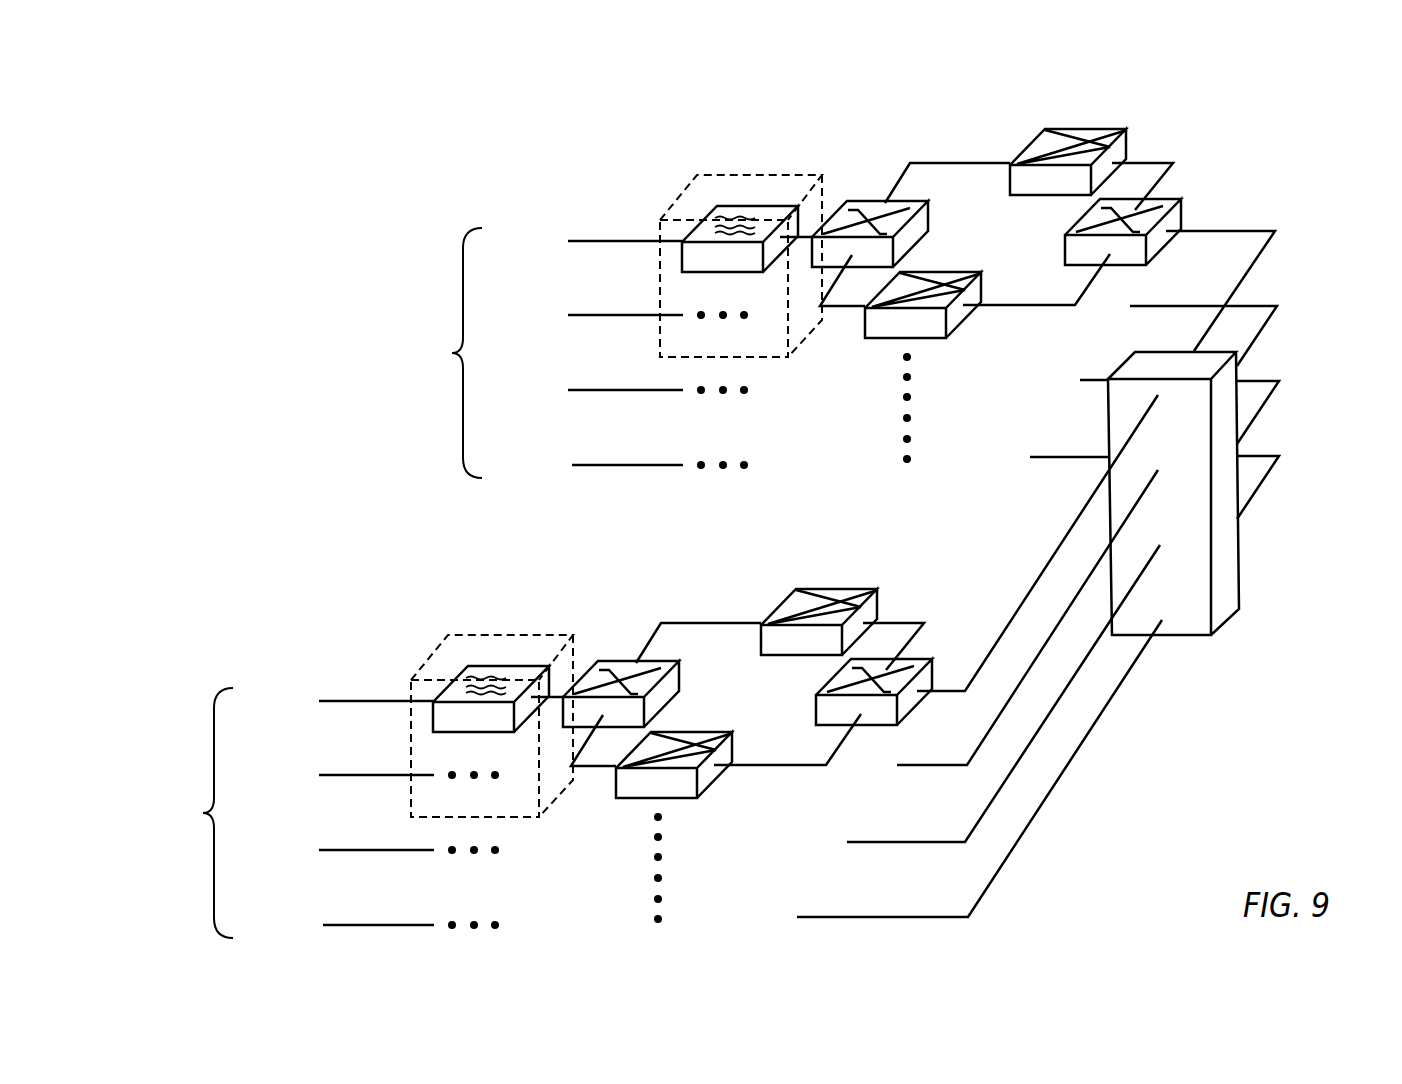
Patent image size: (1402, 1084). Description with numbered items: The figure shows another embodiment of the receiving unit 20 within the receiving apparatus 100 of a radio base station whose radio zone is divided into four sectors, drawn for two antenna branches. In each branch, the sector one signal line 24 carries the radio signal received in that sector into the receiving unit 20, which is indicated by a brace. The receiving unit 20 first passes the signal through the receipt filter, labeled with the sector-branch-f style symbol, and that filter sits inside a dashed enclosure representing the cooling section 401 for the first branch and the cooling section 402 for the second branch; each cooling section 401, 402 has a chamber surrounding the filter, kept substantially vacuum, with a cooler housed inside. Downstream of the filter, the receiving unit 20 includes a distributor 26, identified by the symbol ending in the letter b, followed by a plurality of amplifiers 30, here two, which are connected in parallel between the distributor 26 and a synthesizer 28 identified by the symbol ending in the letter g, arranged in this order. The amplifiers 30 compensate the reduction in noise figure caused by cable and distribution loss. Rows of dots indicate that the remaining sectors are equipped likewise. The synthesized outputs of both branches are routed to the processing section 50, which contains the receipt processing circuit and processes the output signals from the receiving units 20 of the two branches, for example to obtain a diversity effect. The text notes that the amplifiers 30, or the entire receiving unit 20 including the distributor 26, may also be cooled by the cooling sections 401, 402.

The receiving apparatus 100 is at (357, 286).
The receiving unit 20 is at (1185, 78).
The isolator 24 is at (363, 698).
The distributor 26 is at (626, 670).
The synthesizer 28 is at (884, 665).
The amplifier 30 is at (839, 594).
The cooling section 401 is at (673, 217).
The cooling section 402 is at (424, 677).
The processing section 50 is at (1171, 367).